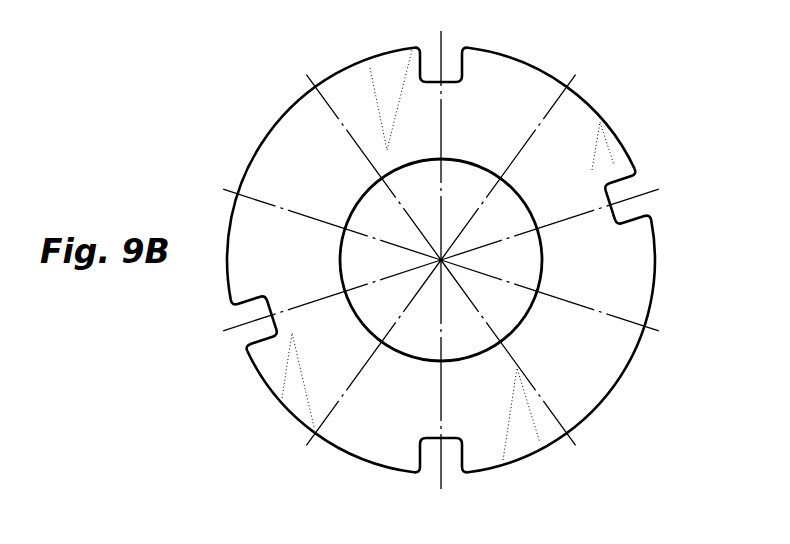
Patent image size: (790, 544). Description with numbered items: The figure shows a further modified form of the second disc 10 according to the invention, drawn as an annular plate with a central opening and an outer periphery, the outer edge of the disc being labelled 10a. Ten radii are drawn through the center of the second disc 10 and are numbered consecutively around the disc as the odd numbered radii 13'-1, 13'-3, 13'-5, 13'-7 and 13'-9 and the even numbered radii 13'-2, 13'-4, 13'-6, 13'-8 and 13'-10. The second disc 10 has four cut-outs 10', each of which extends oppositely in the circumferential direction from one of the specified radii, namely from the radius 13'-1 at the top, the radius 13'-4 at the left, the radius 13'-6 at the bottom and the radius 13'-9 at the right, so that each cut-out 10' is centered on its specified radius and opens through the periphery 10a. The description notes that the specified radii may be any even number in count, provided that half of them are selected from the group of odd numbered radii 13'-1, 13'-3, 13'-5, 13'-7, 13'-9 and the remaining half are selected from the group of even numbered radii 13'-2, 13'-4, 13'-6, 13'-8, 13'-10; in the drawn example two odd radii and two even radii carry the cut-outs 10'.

The second disc 10 is at (441, 266).
The peripheral edge of disc 10a is at (539, 66).
The cut-outs 10' is at (441, 266).
The specified radius 13'-1 is at (406, 137).
The even numbered radius 13'-2 is at (340, 159).
The odd numbered radius 13'-3 is at (304, 209).
The specified radius 13'-4 is at (305, 312).
The odd numbered radius 13'-5 is at (333, 355).
The specified radius 13'-6 is at (484, 389).
The odd numbered radius 13'-7 is at (544, 355).
The even numbered radius 13'-8 is at (584, 295).
The specified radius 13'-9 is at (584, 224).
The even numbered radius 13'-10 is at (571, 158).